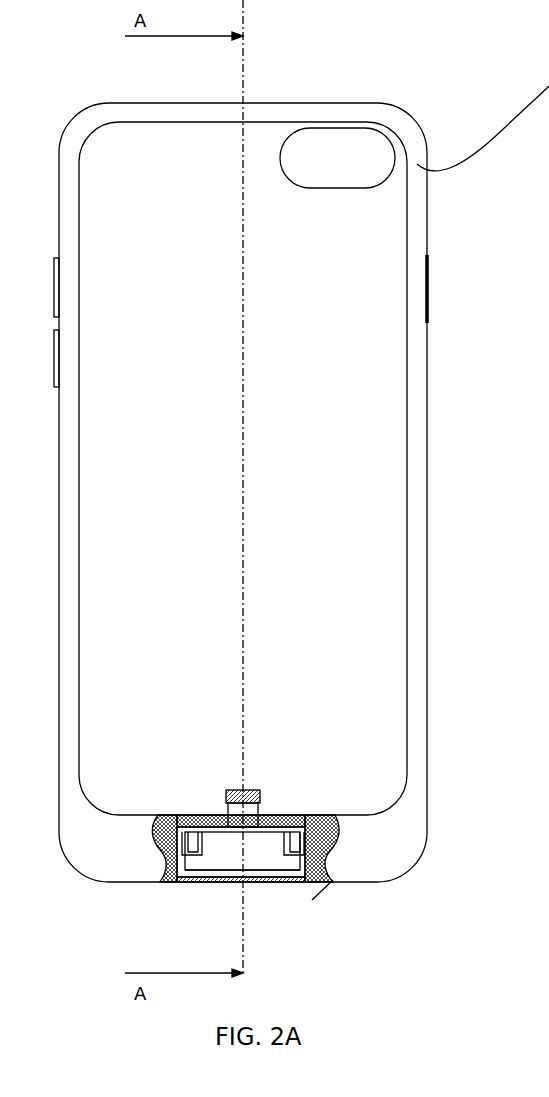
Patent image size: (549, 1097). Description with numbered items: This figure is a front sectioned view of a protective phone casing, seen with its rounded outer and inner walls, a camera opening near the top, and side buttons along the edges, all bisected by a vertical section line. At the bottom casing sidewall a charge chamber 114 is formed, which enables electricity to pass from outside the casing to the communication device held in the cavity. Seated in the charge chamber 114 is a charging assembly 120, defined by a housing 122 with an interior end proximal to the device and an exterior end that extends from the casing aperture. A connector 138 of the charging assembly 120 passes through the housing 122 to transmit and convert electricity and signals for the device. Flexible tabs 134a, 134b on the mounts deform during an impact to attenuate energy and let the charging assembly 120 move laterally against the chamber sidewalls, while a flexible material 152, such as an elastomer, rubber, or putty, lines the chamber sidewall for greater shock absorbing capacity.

The charge chamber 114 is at (162, 880).
The charging assembly 120 is at (203, 886).
The housing 122 is at (282, 860).
The flexible tab 134a is at (178, 830).
The flexible tab 134b is at (308, 840).
The connector 138 is at (248, 788).
The flexible material 152 is at (332, 862).